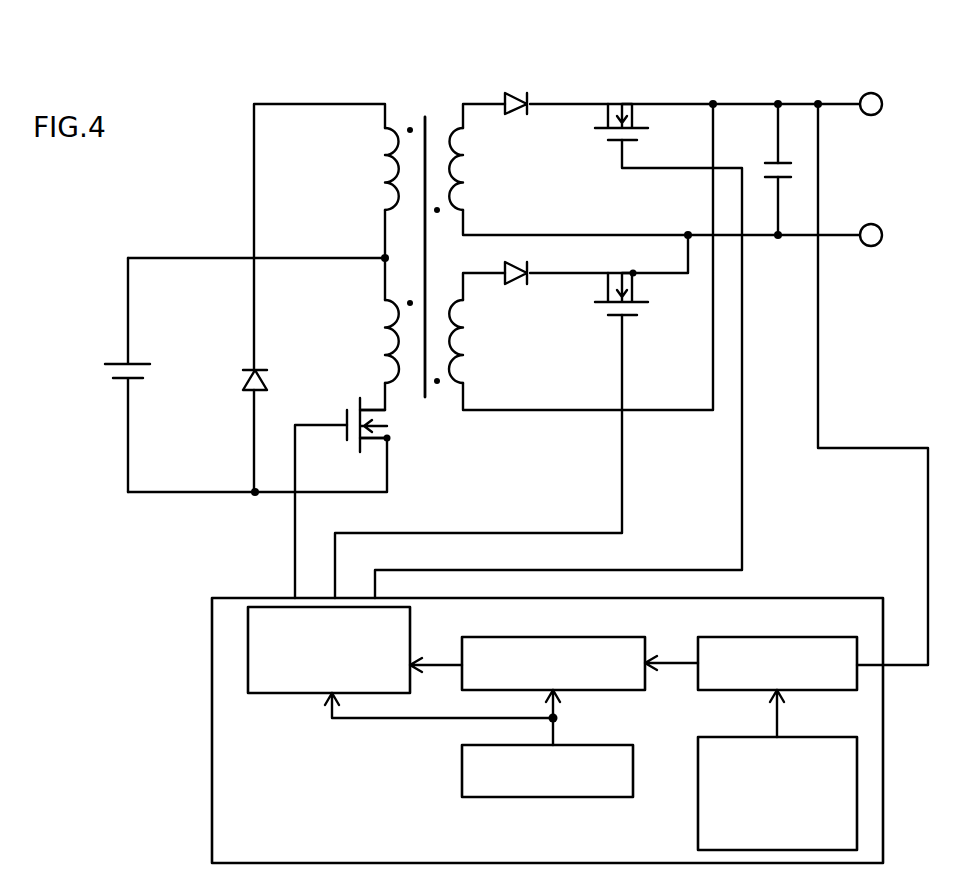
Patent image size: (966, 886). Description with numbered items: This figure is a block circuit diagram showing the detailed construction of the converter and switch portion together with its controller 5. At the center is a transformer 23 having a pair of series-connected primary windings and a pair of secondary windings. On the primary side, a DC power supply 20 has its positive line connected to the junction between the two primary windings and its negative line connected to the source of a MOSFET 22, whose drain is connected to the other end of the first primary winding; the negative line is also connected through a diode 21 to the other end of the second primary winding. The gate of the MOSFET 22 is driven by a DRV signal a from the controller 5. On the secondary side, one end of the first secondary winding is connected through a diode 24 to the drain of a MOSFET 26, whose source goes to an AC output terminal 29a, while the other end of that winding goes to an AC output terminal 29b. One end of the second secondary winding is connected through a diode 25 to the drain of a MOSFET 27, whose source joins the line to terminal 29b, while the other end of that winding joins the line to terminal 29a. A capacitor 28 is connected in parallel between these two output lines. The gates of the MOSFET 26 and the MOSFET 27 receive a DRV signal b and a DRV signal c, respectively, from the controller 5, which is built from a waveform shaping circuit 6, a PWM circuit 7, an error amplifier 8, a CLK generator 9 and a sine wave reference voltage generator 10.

The controller 5 is at (207, 718).
The waveform shaping circuit 6 is at (283, 693).
The PWM circuit 7 is at (545, 633).
The error amplifier 8 is at (750, 633).
The CLK generator 9 is at (462, 770).
The sine wave reference voltage generator 10 is at (698, 785).
The DC power supply 20 is at (112, 352).
The diode 21 is at (245, 368).
The MOSFET 22 is at (400, 430).
The transformer 23 is at (423, 98).
The diode 24 is at (512, 80).
The diode 25 is at (522, 297).
The MOSFET 26 is at (628, 85).
The MOSFET 27 is at (632, 326).
The capacitor 28 is at (800, 168).
The AC output terminal 29a is at (880, 92).
The AC output terminal 29b is at (878, 245).
The DRV signal a is at (295, 557).
The DRV signal b is at (745, 520).
The DRV signal c is at (490, 533).